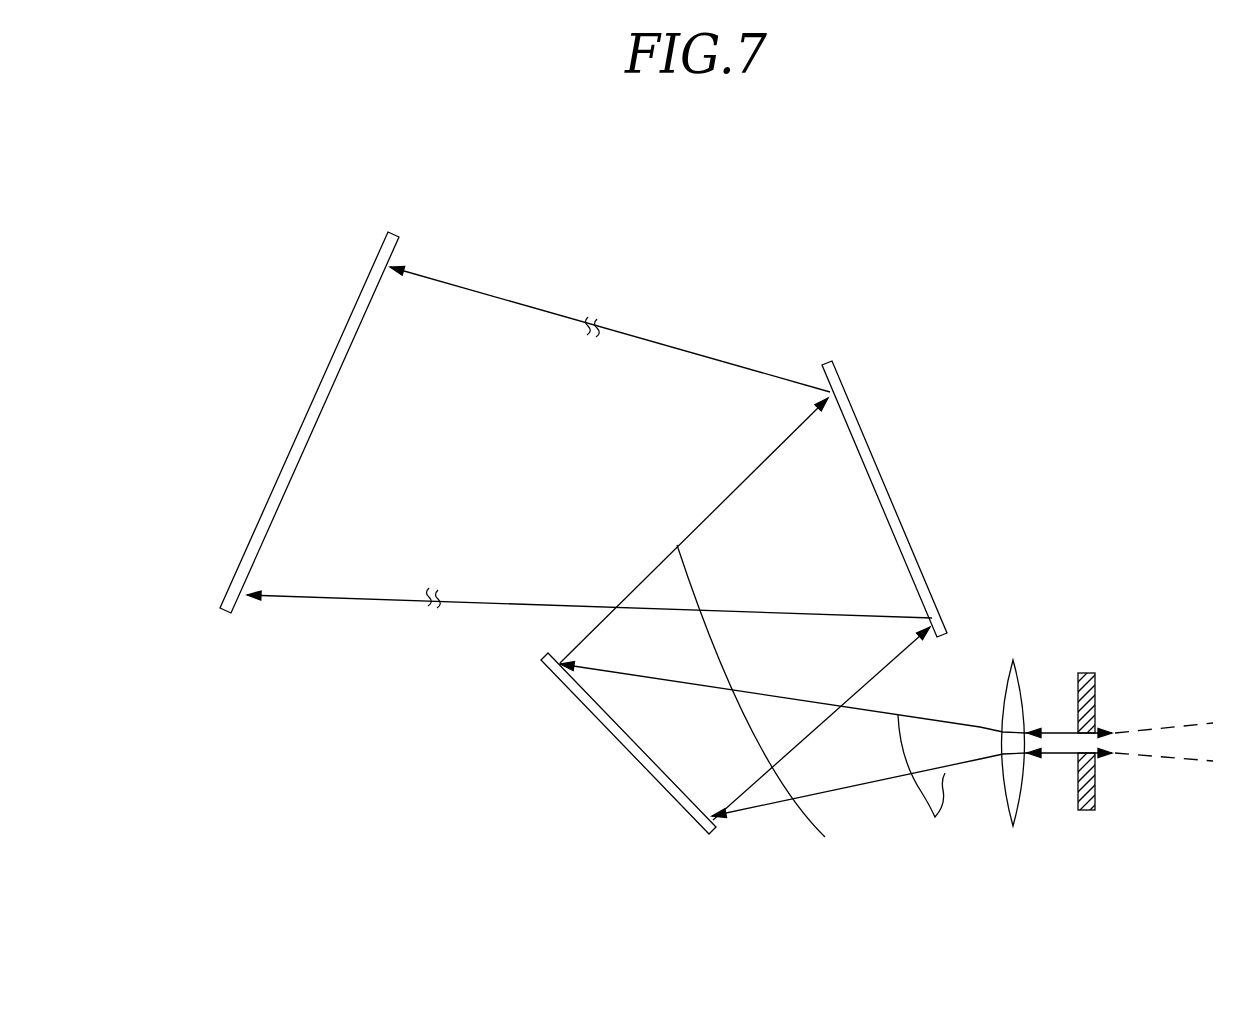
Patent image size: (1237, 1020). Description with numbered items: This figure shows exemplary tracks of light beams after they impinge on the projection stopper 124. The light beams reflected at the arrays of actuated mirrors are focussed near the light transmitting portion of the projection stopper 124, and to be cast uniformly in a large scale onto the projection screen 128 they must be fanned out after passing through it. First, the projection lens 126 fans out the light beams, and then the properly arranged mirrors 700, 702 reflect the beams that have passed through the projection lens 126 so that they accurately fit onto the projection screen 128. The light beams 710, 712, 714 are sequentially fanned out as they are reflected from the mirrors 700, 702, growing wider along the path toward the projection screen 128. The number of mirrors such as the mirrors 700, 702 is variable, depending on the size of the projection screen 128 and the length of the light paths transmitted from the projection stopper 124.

The projection stopper 124 is at (1086, 672).
The projection lens 126 is at (1012, 660).
The projection screen 128 is at (321, 393).
The mirror 700 is at (622, 745).
The mirror 702 is at (857, 418).
The light beam 710 is at (927, 785).
The light beam 712 is at (803, 718).
The light beam 714 is at (513, 297).